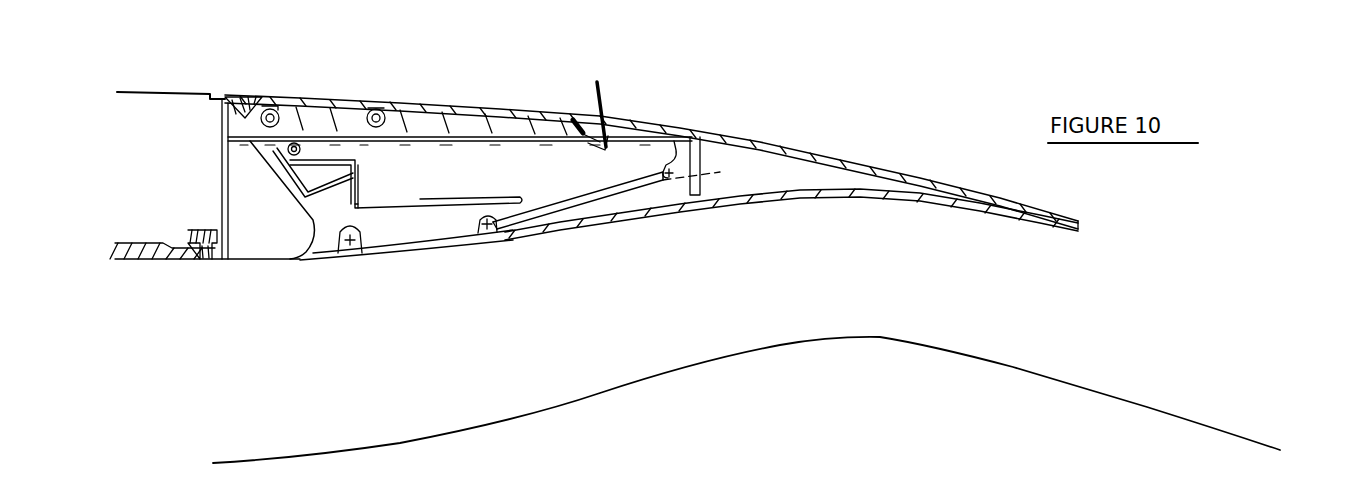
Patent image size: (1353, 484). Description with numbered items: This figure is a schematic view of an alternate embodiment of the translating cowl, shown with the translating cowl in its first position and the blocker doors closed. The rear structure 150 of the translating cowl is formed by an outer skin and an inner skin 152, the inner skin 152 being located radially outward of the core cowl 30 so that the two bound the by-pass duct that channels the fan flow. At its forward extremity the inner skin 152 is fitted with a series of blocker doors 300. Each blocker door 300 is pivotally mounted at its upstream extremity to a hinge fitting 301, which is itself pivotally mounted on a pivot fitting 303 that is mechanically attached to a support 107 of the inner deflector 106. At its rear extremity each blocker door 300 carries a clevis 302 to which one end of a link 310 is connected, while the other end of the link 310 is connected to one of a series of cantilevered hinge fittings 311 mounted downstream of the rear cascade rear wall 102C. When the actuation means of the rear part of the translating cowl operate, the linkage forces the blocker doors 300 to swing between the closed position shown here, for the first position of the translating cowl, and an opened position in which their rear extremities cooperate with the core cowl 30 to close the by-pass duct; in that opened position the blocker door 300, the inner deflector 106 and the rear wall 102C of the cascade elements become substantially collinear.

The core cowl 30 is at (1158, 407).
The rear cascade rear wall 102C is at (613, 102).
The inner deflector 106 is at (288, 152).
The support 107 is at (358, 157).
The rear structure 150 is at (836, 126).
The inner skin 152 is at (730, 206).
The blocker door 300 is at (430, 248).
The hinge fitting 301 is at (333, 250).
The clevis 302 is at (481, 233).
The pivot fitting 303 is at (370, 212).
The link 310 is at (630, 182).
The cantilevered hinge fitting 311 is at (676, 142).